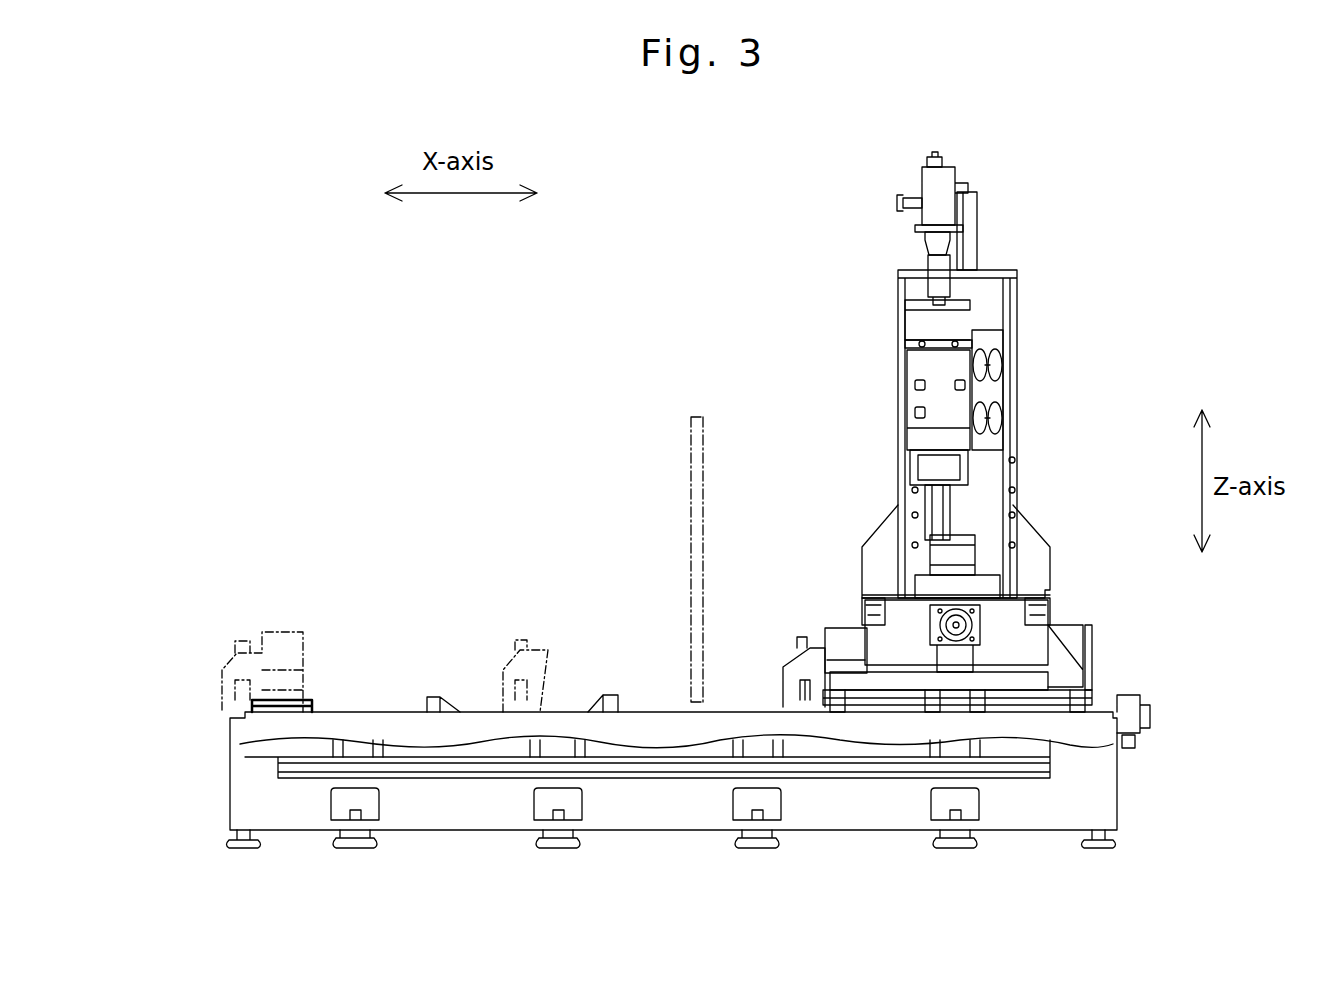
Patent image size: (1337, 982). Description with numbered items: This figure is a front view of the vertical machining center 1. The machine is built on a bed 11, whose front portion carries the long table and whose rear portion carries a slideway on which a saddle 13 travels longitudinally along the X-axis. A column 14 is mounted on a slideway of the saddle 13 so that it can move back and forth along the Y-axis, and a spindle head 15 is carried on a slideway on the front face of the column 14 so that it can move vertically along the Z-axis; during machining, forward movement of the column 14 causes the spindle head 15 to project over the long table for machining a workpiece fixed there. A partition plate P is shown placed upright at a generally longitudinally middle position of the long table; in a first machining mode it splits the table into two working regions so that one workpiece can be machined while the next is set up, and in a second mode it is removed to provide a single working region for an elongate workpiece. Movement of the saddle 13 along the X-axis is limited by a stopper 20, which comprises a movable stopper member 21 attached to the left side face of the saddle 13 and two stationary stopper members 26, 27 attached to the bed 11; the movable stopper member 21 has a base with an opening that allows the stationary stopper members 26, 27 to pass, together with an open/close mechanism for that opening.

The vertical machining center 1 is at (1120, 216).
The bed 11 is at (448, 820).
The saddle 13 is at (1093, 652).
The column 14 is at (1045, 558).
The spindle head 15 is at (925, 397).
The stopper 20 is at (530, 580).
The movable stopper member 21 is at (520, 646).
The stationary stopper member 26 is at (612, 695).
The stationary stopper member 27 is at (436, 697).
The partition plate P is at (690, 510).